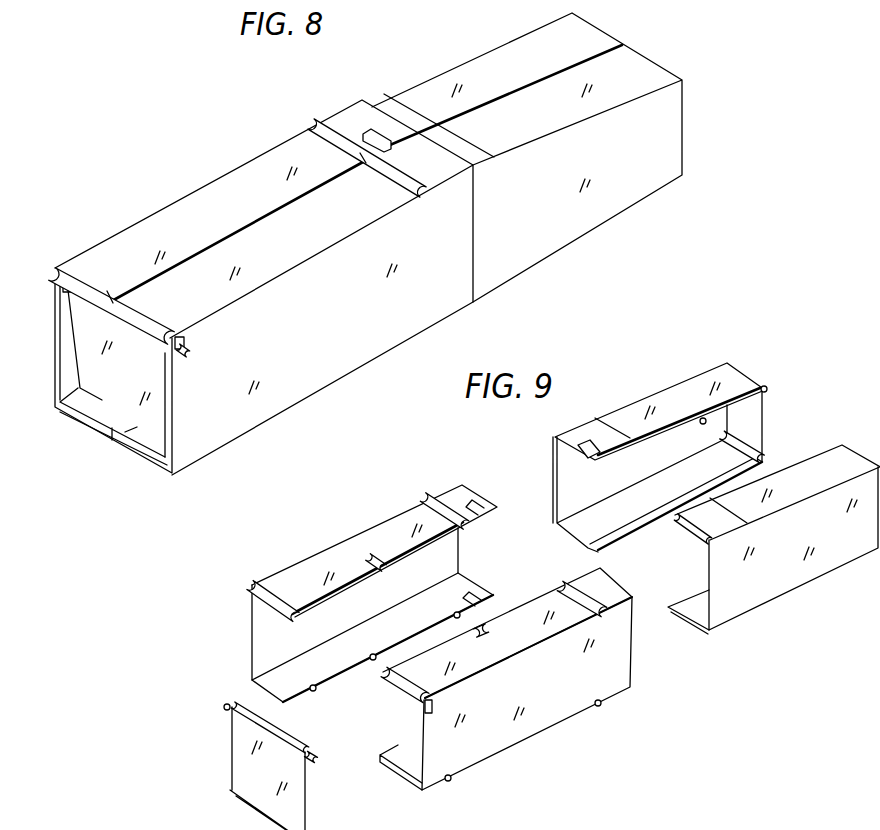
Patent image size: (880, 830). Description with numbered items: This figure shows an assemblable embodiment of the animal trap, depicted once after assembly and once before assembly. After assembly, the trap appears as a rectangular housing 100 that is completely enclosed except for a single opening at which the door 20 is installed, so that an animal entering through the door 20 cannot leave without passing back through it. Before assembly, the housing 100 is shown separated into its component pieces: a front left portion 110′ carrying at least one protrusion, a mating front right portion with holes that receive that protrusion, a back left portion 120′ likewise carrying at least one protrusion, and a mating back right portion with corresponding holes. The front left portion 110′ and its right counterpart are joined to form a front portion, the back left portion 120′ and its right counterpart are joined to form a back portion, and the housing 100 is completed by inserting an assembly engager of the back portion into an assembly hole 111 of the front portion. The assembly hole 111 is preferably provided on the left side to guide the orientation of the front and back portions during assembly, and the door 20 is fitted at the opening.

In FIG. 8, the housing 100 is at (147, 94).
In FIG. 9, the front left portion 110′ is at (373, 537).
In FIG. 9, the back left portion 120′ is at (673, 395).
In FIG. 9, the door 20 is at (240, 767).
In FIG. 9, the assembly hole 111 is at (750, 829).